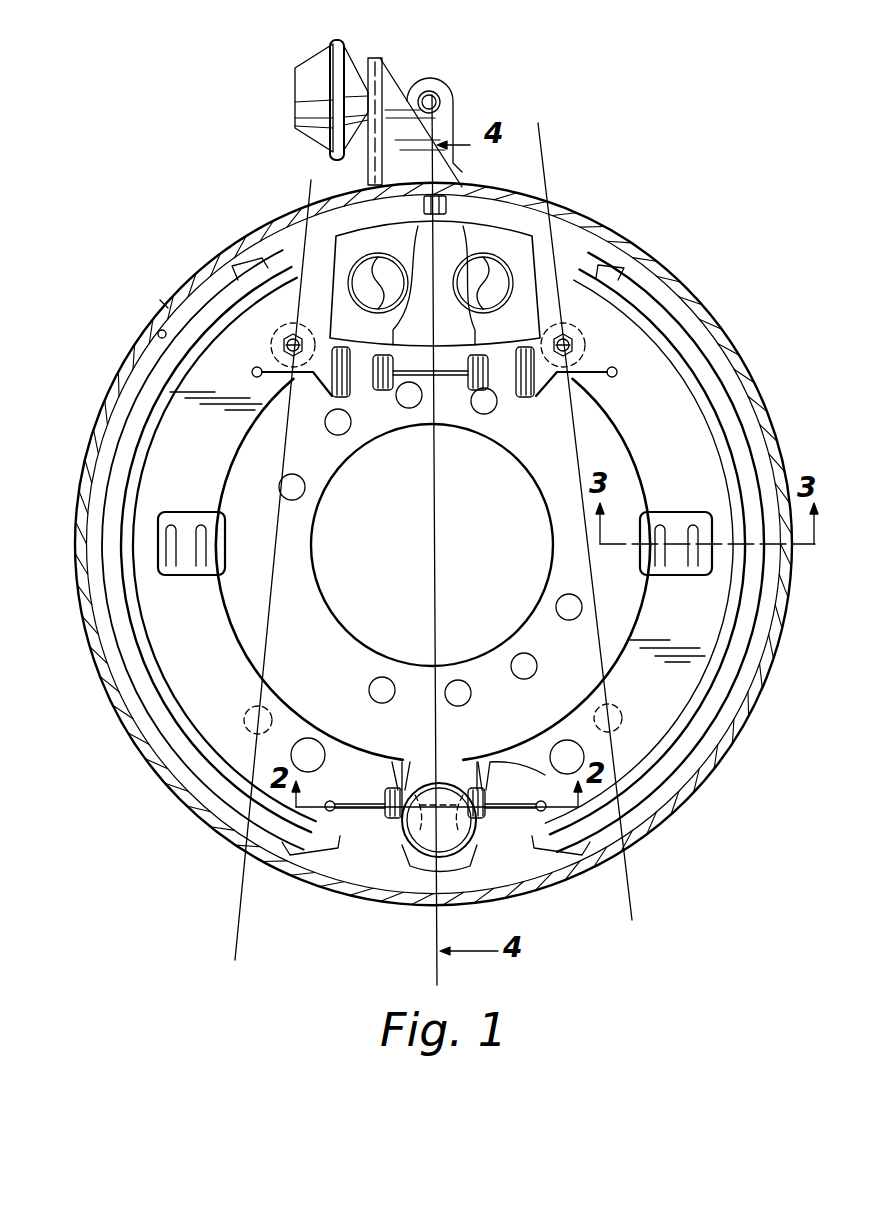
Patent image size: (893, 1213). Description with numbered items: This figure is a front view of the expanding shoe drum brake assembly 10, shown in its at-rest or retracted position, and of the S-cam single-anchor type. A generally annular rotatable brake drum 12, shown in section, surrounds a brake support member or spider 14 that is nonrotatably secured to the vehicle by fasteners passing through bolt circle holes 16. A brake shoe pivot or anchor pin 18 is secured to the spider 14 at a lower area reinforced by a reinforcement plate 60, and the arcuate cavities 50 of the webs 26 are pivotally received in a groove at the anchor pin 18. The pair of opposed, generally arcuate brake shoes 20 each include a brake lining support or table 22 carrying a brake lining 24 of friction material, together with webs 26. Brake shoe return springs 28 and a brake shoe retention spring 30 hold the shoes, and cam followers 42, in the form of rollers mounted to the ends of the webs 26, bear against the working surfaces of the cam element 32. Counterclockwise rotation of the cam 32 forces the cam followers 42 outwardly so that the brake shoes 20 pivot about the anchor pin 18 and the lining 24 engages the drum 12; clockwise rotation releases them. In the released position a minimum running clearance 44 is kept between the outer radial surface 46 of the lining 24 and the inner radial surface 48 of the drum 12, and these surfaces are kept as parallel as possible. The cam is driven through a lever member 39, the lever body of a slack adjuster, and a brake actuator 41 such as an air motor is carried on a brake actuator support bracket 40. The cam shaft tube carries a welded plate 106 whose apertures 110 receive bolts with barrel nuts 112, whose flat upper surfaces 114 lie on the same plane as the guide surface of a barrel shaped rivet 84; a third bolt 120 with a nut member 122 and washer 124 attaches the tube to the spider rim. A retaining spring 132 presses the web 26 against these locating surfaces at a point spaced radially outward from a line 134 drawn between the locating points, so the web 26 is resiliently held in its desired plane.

The expanding shoe drum brake assembly 10 is at (522, 134).
The brake drum 12 is at (718, 337).
The spider 14 is at (317, 620).
The bolt circle holes 16 is at (340, 427).
The anchor pin 18 is at (420, 830).
The brake shoes 20 is at (205, 609).
The brake lining support or table 22 is at (281, 268).
The brake lining 24 is at (247, 278).
The webs 26 is at (212, 462).
The brake shoe return springs 28 is at (434, 387).
The brake shoe retention spring 30 is at (392, 795).
The cam element 32 is at (477, 228).
The lever member 39 is at (455, 98).
The brake actuator support bracket 40 is at (390, 165).
The brake actuator 41 is at (318, 68).
The cam followers 42 is at (380, 276).
The running clearance 44 is at (182, 308).
The outer radial surface 46 is at (212, 290).
The inner radial surface 48 is at (157, 336).
The arcuate cavities 50 is at (415, 800).
The reinforcement plate 60 is at (532, 757).
The barrel shaped rivet 84 is at (274, 708).
The plate 106 is at (466, 330).
The apertures 110 is at (296, 334).
The barrel nuts 112 is at (282, 333).
The upper surface 114 is at (283, 350).
The bolt 120 is at (450, 188).
The nut member 122 is at (500, 194).
The washer 124 is at (407, 90).
The retaining spring 132 is at (183, 512).
The line 134 is at (540, 152).